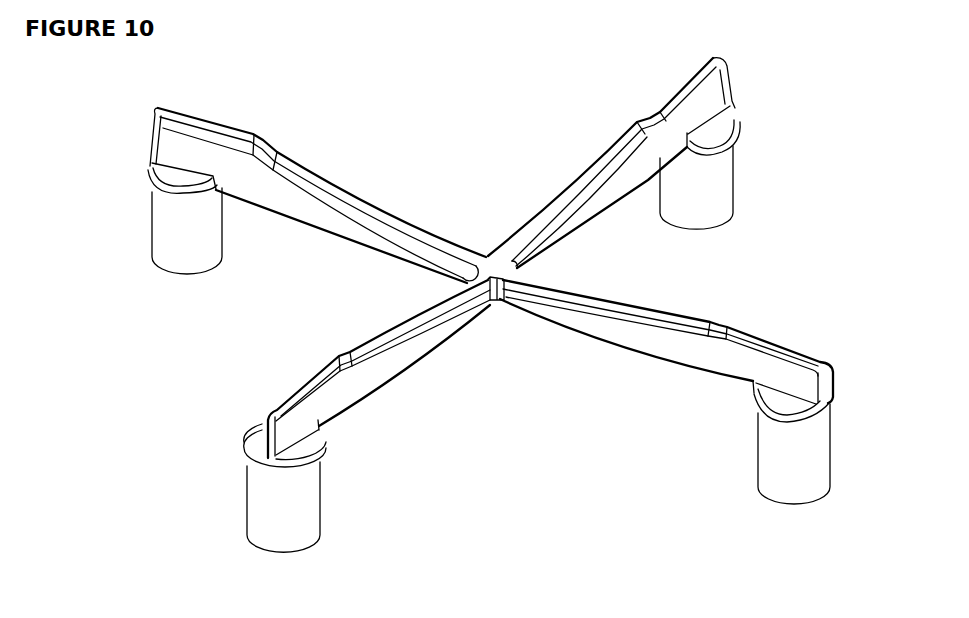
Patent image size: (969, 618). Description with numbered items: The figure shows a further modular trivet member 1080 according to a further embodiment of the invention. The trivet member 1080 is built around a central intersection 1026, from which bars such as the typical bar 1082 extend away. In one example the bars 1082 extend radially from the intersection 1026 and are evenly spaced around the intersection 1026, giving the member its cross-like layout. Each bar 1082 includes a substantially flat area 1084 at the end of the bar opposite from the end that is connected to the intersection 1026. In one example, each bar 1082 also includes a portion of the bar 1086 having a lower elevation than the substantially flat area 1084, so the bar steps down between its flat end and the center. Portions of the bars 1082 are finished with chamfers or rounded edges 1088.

The modular trivet member 1080 is at (386, 95).
The bar 1082 is at (293, 217).
The substantially flat area 1084 is at (290, 391).
The portion of the bar 1086 is at (623, 313).
The chamfers or rounded edges 1088 is at (655, 97).
The intersection 1026 is at (518, 269).